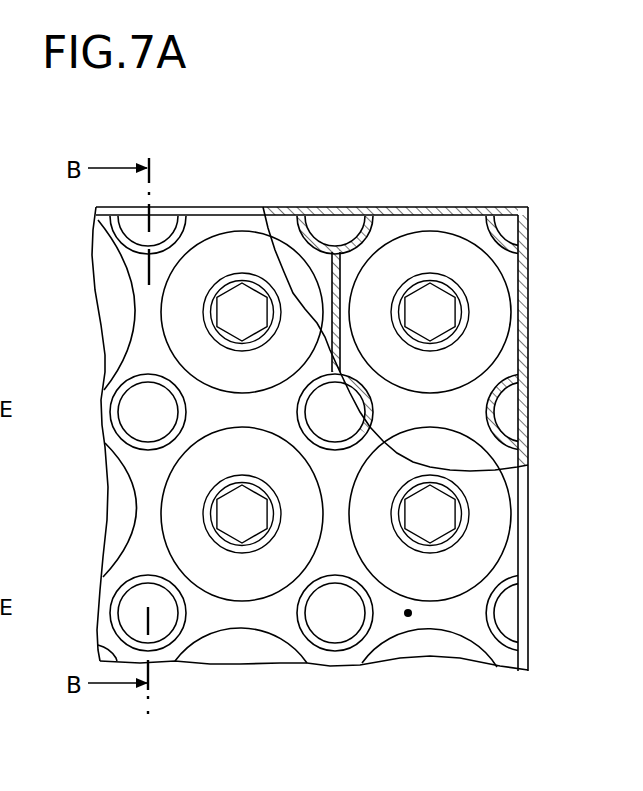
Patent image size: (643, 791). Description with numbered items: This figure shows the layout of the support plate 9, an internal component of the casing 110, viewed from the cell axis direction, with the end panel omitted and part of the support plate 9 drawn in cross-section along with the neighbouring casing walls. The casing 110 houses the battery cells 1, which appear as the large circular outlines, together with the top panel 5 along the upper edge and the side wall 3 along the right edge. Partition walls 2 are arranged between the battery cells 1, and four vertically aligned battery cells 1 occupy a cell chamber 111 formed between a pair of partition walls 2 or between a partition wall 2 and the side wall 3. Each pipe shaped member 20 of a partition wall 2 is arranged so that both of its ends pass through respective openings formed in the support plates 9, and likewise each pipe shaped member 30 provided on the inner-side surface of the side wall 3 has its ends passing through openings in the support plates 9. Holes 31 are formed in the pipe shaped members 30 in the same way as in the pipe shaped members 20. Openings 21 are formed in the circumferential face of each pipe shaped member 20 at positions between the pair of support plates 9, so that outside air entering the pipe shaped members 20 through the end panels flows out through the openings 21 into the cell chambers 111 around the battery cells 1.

The battery cell 1 is at (238, 240).
The partition wall 2 is at (331, 252).
The side wall 3 is at (530, 342).
The top panel 5 is at (200, 213).
The support plate 9 is at (410, 617).
The pipe shaped member 20 is at (115, 228).
The opening 21 is at (368, 416).
The pipe shaped member 30 is at (507, 388).
The hole 31 is at (490, 417).
The casing 110 is at (531, 224).
The cell chamber 111 is at (518, 207).